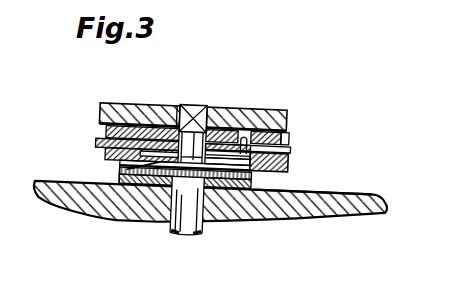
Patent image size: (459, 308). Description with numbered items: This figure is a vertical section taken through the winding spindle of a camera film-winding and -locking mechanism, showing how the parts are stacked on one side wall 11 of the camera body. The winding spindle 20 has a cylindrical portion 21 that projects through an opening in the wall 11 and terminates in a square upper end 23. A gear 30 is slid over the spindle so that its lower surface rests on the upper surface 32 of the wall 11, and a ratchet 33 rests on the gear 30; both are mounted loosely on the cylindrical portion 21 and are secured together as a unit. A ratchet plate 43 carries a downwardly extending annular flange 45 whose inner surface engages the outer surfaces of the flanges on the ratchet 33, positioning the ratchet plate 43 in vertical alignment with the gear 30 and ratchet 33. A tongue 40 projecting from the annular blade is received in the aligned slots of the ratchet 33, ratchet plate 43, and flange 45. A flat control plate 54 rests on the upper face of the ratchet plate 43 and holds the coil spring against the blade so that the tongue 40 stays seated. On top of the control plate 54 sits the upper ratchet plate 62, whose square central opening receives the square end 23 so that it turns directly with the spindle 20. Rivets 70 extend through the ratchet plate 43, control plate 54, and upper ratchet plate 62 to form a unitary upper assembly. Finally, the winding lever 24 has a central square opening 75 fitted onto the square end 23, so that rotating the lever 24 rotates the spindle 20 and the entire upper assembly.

The side wall 11 is at (382, 208).
The winding spindle 20 is at (185, 235).
The cylindrical portion 21 is at (100, 158).
The square upper end 23 is at (190, 104).
The winding lever 24 is at (243, 111).
The gear 30 is at (258, 179).
The upper surface 32 is at (368, 197).
The ratchet 33 is at (258, 169).
The tongue 40 is at (125, 177).
The ratchet plate 43 is at (290, 150).
The annular flange 45 is at (290, 155).
The control plate 54 is at (288, 140).
The upper ratchet plate 62 is at (283, 138).
The rivets 70 is at (274, 112).
The central square opening 75 is at (178, 104).